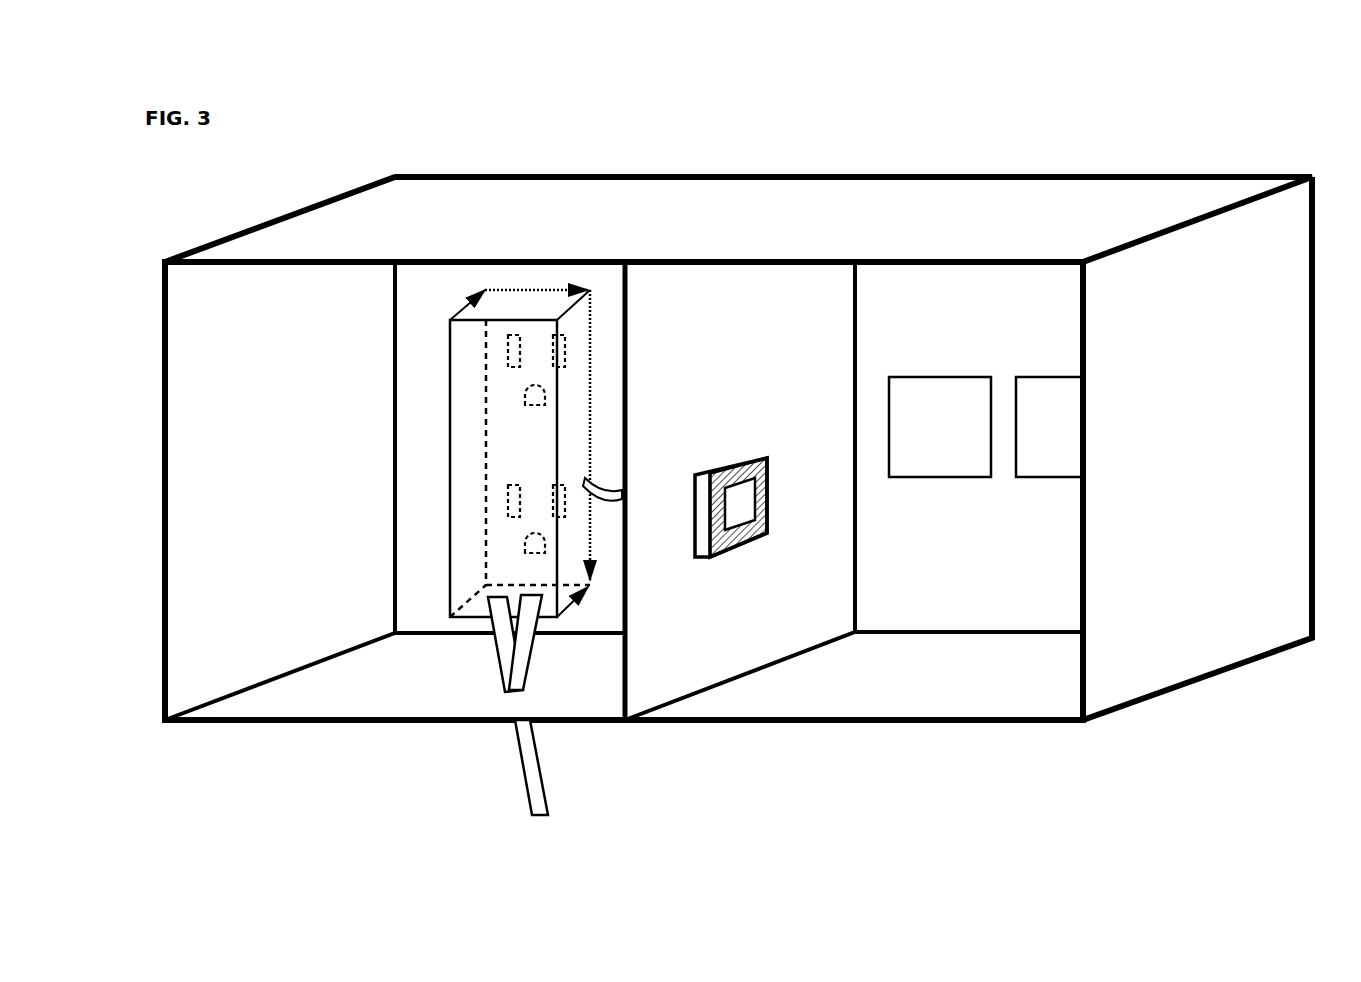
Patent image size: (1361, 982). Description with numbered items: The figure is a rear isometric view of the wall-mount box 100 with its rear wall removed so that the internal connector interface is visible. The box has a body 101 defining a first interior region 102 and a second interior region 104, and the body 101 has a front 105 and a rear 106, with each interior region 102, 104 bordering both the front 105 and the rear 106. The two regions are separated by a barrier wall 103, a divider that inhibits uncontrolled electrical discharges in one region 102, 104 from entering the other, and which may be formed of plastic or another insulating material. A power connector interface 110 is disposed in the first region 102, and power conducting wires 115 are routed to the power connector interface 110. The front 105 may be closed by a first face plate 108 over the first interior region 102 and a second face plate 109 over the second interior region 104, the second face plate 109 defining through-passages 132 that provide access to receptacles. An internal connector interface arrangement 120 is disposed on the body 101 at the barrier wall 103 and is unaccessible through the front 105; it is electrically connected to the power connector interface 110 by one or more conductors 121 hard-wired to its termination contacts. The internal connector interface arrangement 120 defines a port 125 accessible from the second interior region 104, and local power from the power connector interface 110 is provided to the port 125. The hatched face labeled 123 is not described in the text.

The wall-mount box 100 is at (1112, 170).
The body 101 is at (738, 195).
The first interior region 102 is at (388, 678).
The barrier wall 103 is at (740, 491).
The second interior region 104 is at (885, 667).
The front 105 is at (1284, 152).
The rear 106 is at (1003, 667).
The first face plate 108 is at (307, 491).
The second face plate 109 is at (969, 299).
The power connector interface 110 is at (445, 467).
The power conducting wires 115 is at (492, 767).
The internal connector interface arrangement 120 is at (735, 525).
The conductors 121 is at (640, 470).
The device housing face 123 is at (760, 535).
The port 125 is at (738, 464).
The through-passages 132 is at (1034, 482).